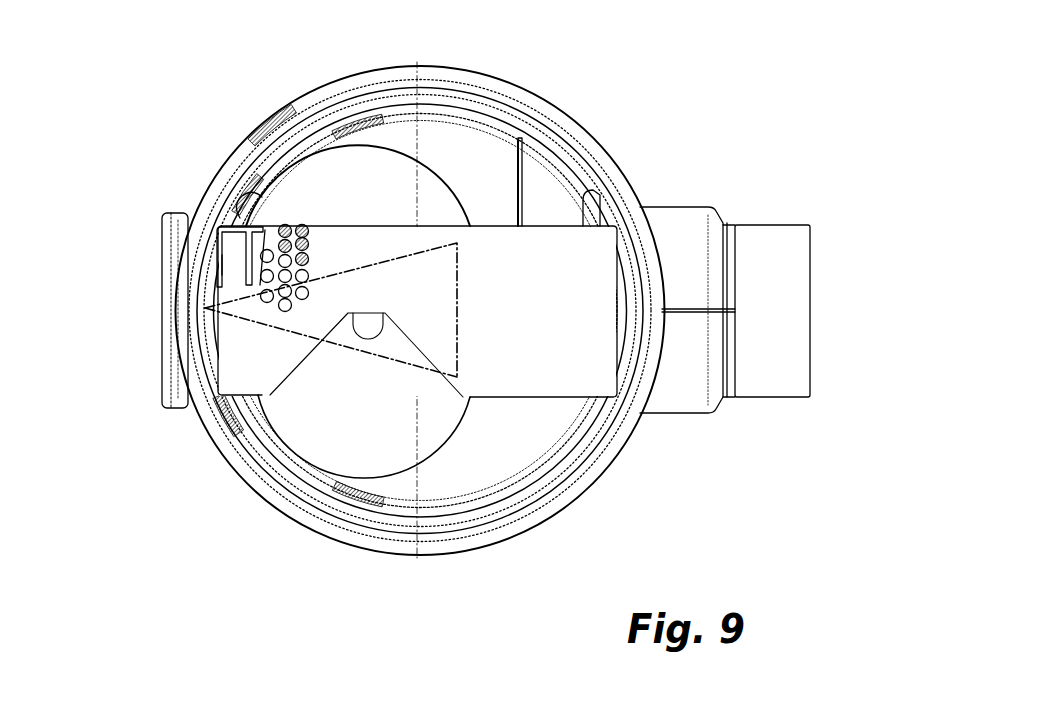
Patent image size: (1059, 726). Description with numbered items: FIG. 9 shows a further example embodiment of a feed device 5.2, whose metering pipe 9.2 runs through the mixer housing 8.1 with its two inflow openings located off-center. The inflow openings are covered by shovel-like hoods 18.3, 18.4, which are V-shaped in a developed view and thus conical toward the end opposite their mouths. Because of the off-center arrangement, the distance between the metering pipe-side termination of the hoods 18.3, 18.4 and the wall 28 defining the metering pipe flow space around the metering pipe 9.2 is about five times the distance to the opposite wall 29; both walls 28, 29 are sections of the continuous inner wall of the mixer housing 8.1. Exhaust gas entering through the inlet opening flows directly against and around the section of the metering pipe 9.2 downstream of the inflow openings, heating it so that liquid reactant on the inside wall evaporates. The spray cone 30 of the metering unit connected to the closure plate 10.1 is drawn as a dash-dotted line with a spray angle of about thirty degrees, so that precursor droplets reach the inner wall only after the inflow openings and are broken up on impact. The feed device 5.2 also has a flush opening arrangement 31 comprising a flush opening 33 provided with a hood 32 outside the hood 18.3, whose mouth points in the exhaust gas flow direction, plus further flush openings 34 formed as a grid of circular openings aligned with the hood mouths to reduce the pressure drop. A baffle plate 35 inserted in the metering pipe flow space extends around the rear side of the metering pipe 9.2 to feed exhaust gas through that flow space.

The feed device 5.2 is at (222, 95).
The mixer housing 8.1 is at (232, 150).
The wall 29 is at (250, 205).
The hood 32 is at (213, 248).
The flush opening 33 is at (235, 265).
The closure plate 10.1 is at (160, 358).
The hood 18.4 is at (322, 430).
The flush opening arrangement 31 is at (265, 315).
The spray cone 30 is at (353, 268).
The flush openings 34 is at (287, 229).
The hood 18.3 is at (410, 155).
The baffle plate 35 is at (523, 187).
The wall 28 is at (580, 207).
The metering pipe 9.2 is at (514, 310).